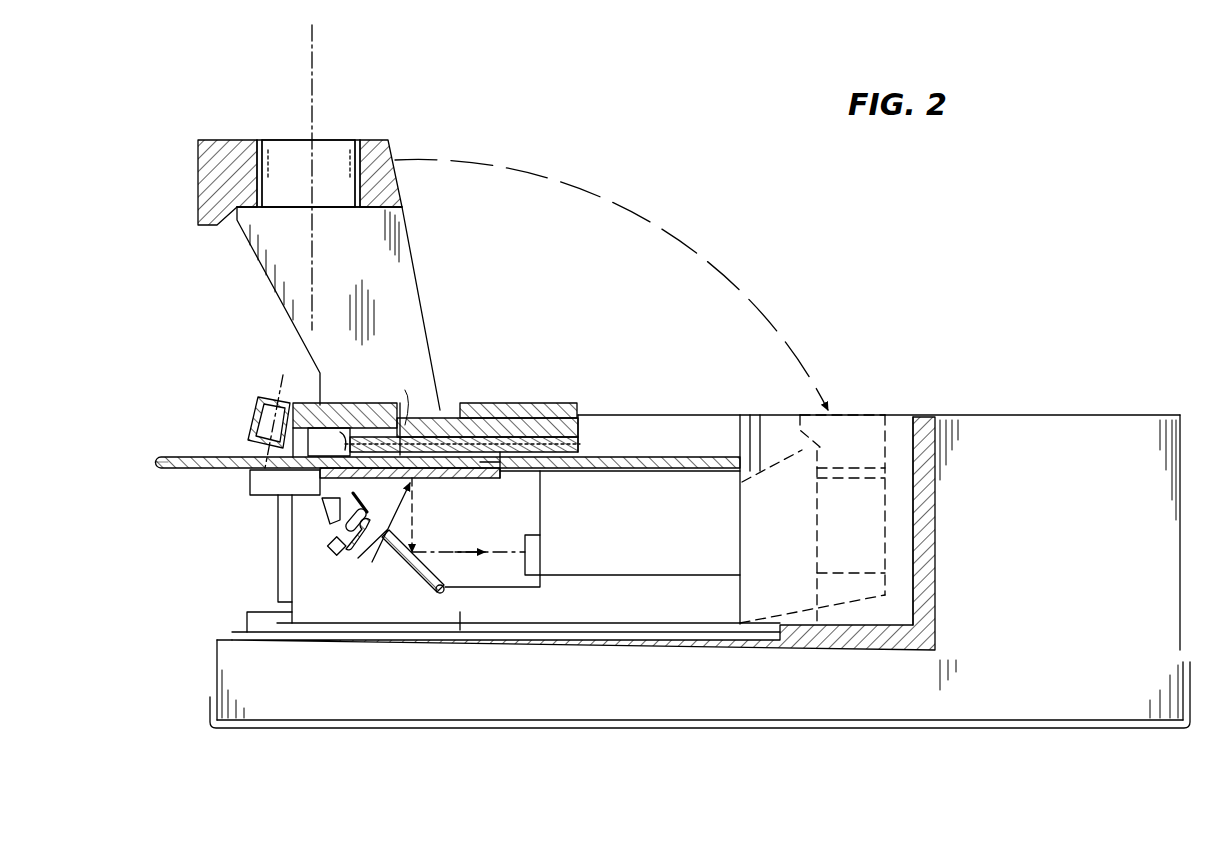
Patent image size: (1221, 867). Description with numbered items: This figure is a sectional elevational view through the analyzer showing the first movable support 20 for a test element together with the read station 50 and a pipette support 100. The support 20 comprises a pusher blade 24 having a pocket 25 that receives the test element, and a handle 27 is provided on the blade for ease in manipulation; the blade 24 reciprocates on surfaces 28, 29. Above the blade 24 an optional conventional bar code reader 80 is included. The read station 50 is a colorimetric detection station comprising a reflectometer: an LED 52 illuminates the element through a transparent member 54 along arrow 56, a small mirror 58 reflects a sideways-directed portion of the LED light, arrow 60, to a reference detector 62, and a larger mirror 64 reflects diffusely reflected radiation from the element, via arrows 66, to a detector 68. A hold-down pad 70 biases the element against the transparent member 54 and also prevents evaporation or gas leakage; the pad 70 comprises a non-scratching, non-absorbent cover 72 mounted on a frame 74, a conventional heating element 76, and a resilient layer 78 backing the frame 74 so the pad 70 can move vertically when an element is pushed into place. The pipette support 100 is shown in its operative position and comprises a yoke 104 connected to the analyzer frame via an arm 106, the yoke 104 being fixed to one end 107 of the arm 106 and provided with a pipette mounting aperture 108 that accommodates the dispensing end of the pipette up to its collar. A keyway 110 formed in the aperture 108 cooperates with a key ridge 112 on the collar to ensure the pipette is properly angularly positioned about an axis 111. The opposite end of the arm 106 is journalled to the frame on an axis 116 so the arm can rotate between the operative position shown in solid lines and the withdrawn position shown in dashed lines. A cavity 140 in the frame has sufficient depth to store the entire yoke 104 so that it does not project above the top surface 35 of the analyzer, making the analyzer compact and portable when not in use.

The pipette support 100 is at (195, 118).
The yoke 104 is at (395, 145).
The arm 106 is at (413, 265).
The end of arm 107 is at (402, 210).
The pipette mounting aperture 108 is at (328, 145).
The keyway 110 is at (258, 138).
The axis 111 is at (313, 55).
The key ridge 112 is at (678, 243).
The first movable support 20 is at (148, 485).
The pusher blade 24 is at (705, 456).
The pocket 25 is at (458, 476).
The handle 27 is at (190, 455).
The surface 28 is at (250, 480).
The surface 29 is at (632, 470).
The top surface 35 is at (1060, 417).
The read station 50 is at (382, 560).
The LED 52 is at (340, 556).
The transparent member 54 is at (475, 480).
The arrow 56 is at (391, 522).
The small mirror 58 is at (352, 496).
The arrow 60 is at (340, 535).
The reference detector 62 is at (312, 508).
The larger mirror 64 is at (420, 578).
The arrows 66 is at (413, 548).
The detector 68 is at (545, 553).
The hold-down pad 70 is at (366, 410).
The cover 72 is at (329, 442).
The frame 74 is at (578, 441).
The heating element 76 is at (500, 478).
The resilient layer 78 is at (576, 412).
The bar code reader 80 is at (268, 396).
The axis 116 is at (462, 618).
The cavity 140 is at (915, 417).